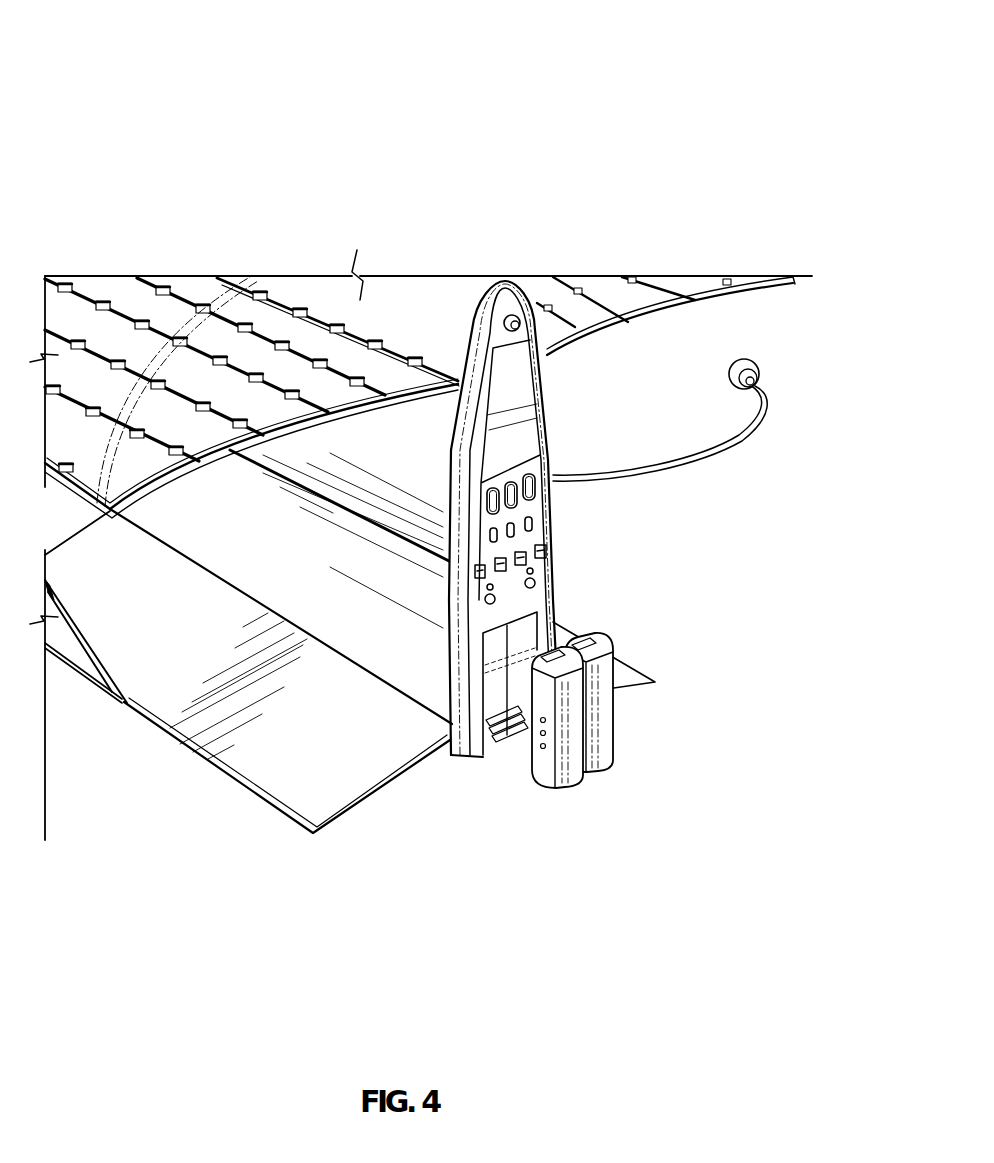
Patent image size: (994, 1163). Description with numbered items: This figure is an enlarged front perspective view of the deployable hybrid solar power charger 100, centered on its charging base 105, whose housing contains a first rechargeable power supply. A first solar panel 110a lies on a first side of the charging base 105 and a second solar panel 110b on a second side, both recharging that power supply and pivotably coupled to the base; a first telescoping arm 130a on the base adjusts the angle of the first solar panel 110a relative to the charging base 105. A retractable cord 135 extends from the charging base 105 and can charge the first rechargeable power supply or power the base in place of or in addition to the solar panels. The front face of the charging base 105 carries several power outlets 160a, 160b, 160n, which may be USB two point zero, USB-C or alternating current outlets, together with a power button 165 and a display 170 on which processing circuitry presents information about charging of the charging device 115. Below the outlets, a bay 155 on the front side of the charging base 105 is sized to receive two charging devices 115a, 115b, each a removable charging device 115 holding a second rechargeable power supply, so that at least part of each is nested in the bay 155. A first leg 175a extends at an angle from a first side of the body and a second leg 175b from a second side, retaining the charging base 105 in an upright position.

The deployable hybrid solar power charger 100 is at (117, 40).
The charging base 105 is at (437, 325).
The first solar panel 110a is at (233, 450).
The second solar panel 110b is at (690, 307).
The charging device 115 is at (603, 700).
The charging device 115a is at (560, 775).
The charging device 115b is at (603, 757).
The first telescoping arm 130a is at (120, 708).
The retractable cord 135 is at (763, 410).
The bay 155 is at (492, 740).
The power outlet 160a is at (537, 482).
The power outlet 160b is at (530, 522).
The power outlet 160n is at (497, 567).
The power button 165 is at (522, 316).
The display 170 is at (526, 380).
The first leg 175a is at (215, 768).
The second leg 175b is at (633, 677).